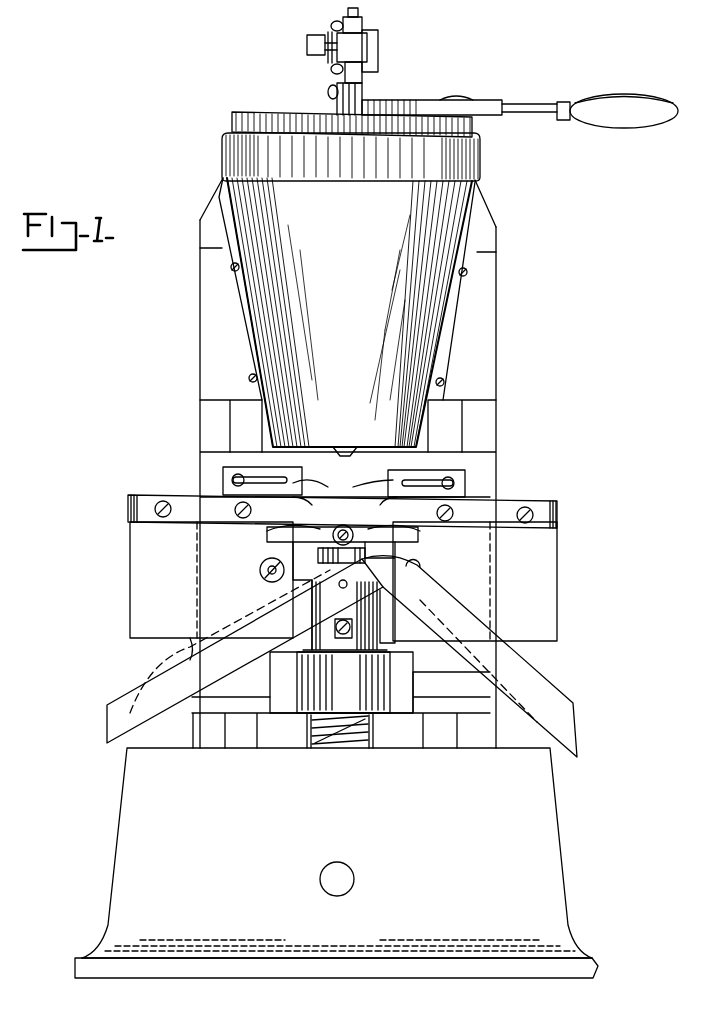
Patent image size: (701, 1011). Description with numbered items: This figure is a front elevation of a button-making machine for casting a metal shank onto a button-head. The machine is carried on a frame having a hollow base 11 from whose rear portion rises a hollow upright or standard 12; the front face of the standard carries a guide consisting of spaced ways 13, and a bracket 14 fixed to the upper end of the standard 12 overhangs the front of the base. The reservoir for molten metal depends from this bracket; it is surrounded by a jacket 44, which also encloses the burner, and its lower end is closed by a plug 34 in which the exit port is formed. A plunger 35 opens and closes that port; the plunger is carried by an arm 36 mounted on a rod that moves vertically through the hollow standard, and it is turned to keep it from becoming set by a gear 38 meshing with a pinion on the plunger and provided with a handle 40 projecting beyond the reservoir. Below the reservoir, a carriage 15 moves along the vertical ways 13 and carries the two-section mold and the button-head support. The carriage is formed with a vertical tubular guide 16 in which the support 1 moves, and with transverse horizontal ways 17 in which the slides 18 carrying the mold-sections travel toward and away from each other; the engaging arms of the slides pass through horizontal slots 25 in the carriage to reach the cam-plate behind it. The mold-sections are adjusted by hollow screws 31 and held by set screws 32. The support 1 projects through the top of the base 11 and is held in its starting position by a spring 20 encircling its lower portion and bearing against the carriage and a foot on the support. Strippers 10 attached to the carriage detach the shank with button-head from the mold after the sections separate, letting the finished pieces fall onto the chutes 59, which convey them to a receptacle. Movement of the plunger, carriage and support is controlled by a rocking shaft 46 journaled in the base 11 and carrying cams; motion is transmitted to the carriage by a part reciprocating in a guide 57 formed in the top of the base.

The support 1 is at (373, 723).
The strippers 10 is at (368, 522).
The hollow base 11 is at (122, 819).
The standard 12 is at (210, 345).
The ways 13 is at (240, 417).
The bracket 14 is at (237, 145).
The carriage 15 is at (483, 472).
The vertical tubular guide 16 is at (323, 620).
The transverse horizontal ways 17 is at (295, 518).
The slides 18 is at (137, 568).
The spring 20 is at (310, 733).
The horizontal slots 25 is at (293, 557).
The hollow screws 31 is at (128, 505).
The set screws 32 is at (517, 514).
The plug 34 is at (363, 88).
The plunger 35 is at (360, 12).
The arm 36 is at (357, 47).
The gear 38 is at (380, 100).
The handle 40 is at (602, 85).
The jacket 44 is at (349, 312).
The rocking shaft 46 is at (343, 877).
The guide 57 is at (367, 750).
The chutes 59 is at (143, 687).